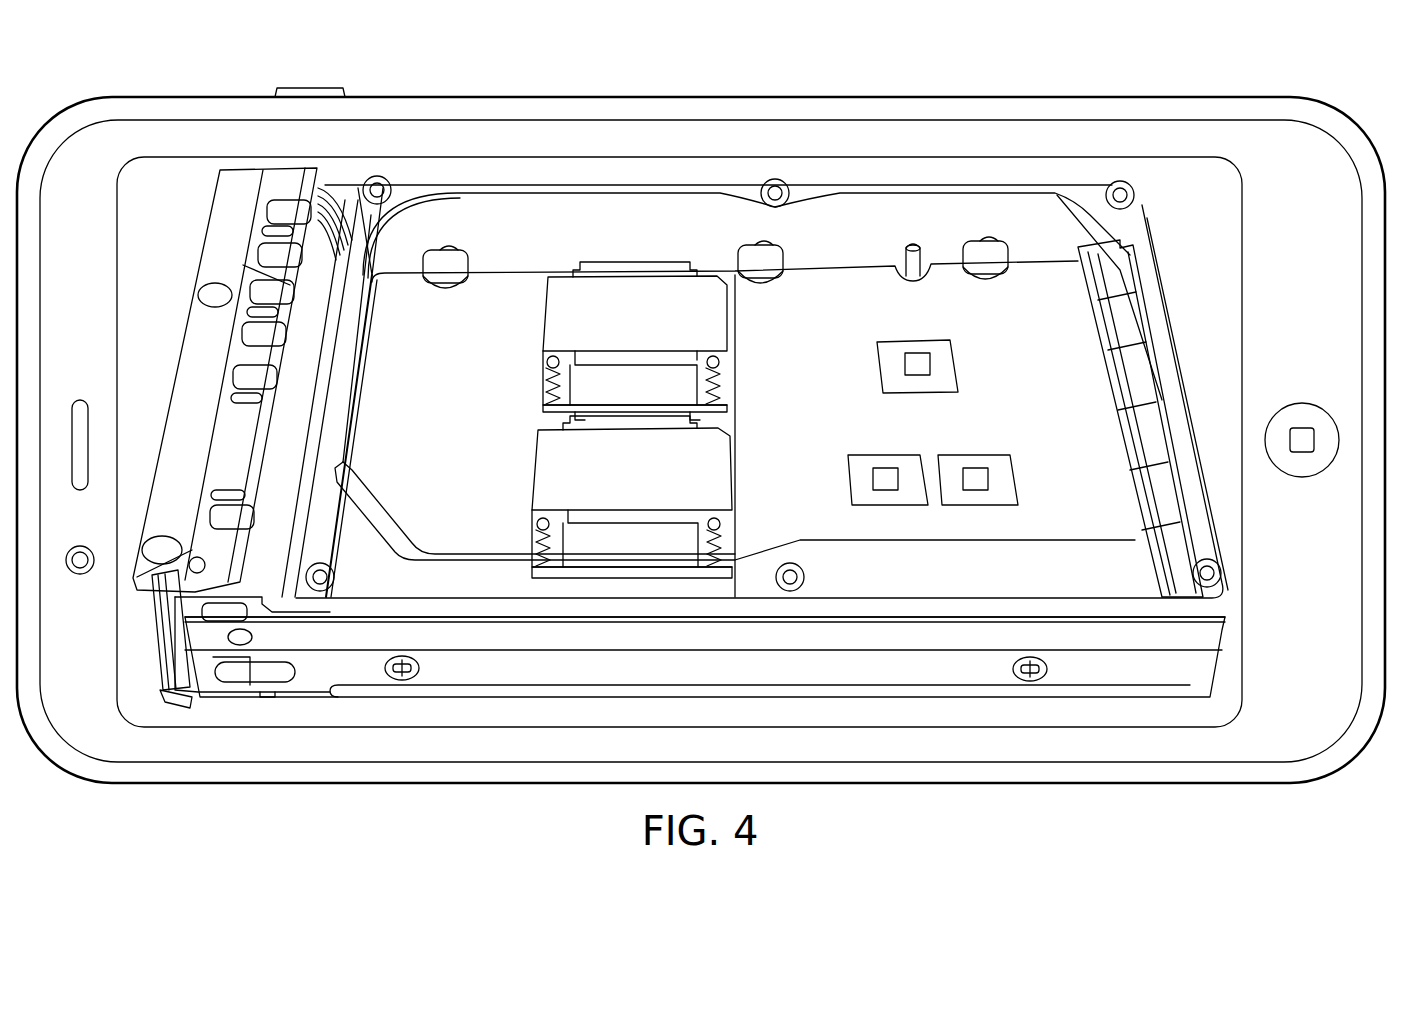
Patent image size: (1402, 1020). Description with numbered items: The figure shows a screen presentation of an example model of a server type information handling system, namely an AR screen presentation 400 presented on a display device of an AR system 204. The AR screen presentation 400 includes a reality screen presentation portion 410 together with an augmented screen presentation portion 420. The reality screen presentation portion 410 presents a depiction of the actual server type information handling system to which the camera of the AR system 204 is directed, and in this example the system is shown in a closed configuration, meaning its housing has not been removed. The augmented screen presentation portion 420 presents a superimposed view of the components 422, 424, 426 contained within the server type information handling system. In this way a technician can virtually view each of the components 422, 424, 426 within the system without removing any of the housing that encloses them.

The AR system 204 is at (1032, 96).
The AR screen presentation 400 is at (606, 150).
The reality screen presentation portion 410 is at (1202, 663).
The augmented screen presentation portion 420 is at (1065, 363).
The component 422 is at (545, 322).
The component 424 is at (918, 352).
The component 426 is at (887, 462).